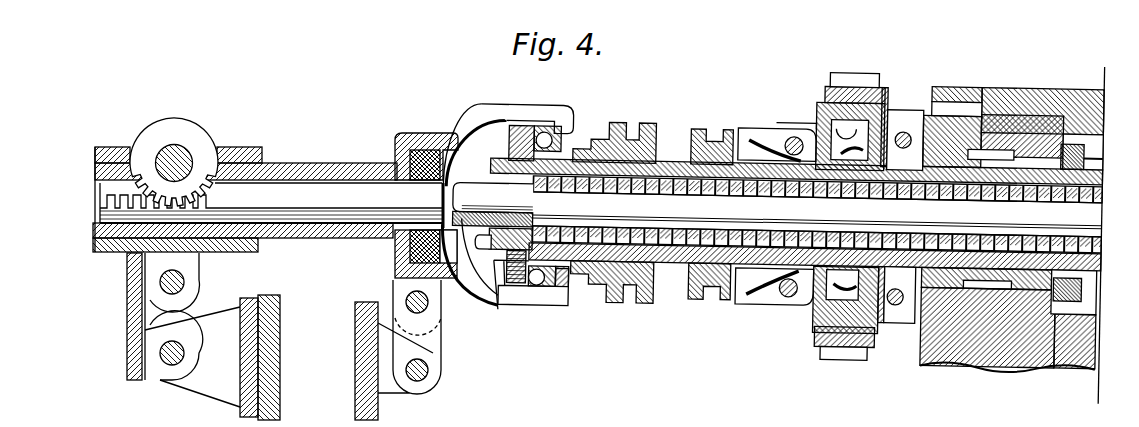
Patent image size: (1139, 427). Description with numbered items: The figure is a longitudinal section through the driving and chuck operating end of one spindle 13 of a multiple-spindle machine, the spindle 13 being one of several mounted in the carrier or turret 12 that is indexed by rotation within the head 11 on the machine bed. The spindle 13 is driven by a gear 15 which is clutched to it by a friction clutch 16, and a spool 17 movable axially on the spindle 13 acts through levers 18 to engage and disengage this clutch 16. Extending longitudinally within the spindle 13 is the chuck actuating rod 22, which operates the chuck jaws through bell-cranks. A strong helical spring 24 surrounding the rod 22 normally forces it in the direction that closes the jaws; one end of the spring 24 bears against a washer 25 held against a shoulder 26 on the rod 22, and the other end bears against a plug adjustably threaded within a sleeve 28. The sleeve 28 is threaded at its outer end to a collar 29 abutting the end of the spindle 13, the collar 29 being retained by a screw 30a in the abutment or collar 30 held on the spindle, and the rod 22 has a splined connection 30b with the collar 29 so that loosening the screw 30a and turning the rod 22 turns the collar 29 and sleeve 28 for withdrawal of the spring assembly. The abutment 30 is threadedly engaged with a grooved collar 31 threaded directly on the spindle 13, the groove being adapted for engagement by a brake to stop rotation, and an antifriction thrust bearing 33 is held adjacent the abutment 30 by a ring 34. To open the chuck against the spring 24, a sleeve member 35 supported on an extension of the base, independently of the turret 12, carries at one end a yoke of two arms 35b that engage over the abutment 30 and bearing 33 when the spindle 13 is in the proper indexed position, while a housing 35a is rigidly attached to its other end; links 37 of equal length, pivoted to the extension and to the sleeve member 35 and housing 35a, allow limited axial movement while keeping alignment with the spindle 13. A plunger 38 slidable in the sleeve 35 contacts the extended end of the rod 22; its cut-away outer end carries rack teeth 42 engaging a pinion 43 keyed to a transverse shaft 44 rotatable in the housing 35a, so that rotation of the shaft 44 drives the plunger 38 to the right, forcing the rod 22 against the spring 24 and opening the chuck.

The head 11 is at (1034, 86).
The carrier or turret 12 is at (1003, 351).
The spindle 13 is at (682, 267).
The gear 15 is at (847, 357).
The friction clutch 16 is at (815, 320).
The spool 17 is at (714, 286).
The levers 18 is at (757, 127).
The chuck actuating rod 22 is at (817, 214).
The helical spring 24 is at (1100, 246).
The washer 25 is at (500, 259).
The shoulder 26 is at (482, 185).
The sleeve 28 is at (1103, 182).
The collar 29 is at (490, 245).
The abutment or collar 30 is at (500, 126).
The screw 30a is at (498, 313).
The splined connection 30b is at (475, 282).
The grooved collar 31 is at (650, 133).
The antifriction thrust bearing 33 is at (535, 298).
The ring 34 is at (566, 143).
The sleeve member 35 is at (249, 165).
The housing 35a is at (95, 153).
The yoke arms 35b is at (552, 115).
The links 37 is at (148, 318).
The plunger 38 is at (305, 192).
The rack teeth 42 is at (140, 193).
The pinion 43 is at (147, 136).
The transverse shaft 44 is at (177, 148).